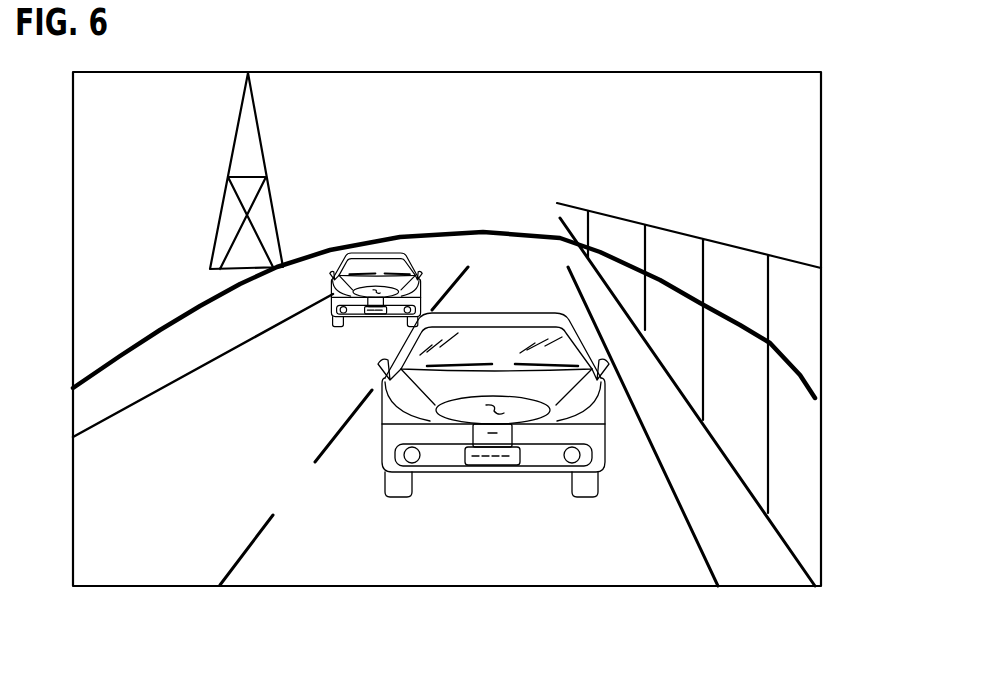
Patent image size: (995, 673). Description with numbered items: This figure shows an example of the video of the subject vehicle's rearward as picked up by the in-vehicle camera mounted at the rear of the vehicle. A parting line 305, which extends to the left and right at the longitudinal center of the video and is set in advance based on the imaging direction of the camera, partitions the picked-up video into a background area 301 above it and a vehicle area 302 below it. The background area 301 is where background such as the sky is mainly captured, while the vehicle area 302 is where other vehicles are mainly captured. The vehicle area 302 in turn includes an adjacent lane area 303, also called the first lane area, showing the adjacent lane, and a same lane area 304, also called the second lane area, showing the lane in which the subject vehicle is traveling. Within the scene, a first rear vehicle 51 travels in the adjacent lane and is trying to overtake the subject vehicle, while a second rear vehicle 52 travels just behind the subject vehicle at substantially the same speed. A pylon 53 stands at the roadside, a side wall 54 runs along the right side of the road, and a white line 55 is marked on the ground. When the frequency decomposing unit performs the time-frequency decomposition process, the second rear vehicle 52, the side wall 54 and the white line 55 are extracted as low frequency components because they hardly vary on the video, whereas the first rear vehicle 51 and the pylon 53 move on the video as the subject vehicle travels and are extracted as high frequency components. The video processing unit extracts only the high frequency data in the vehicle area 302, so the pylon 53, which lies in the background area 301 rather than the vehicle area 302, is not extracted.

The first rear vehicle 51 is at (377, 250).
The second rear vehicle 52 is at (493, 310).
The pylon 53 is at (253, 108).
The side wall 54 is at (618, 218).
The white line 55 is at (227, 570).
The background area 301 is at (780, 198).
The vehicle area 302 is at (653, 512).
The adjacent lane area 303 is at (127, 550).
The same lane area 304 is at (598, 570).
The parting line 305 is at (785, 357).